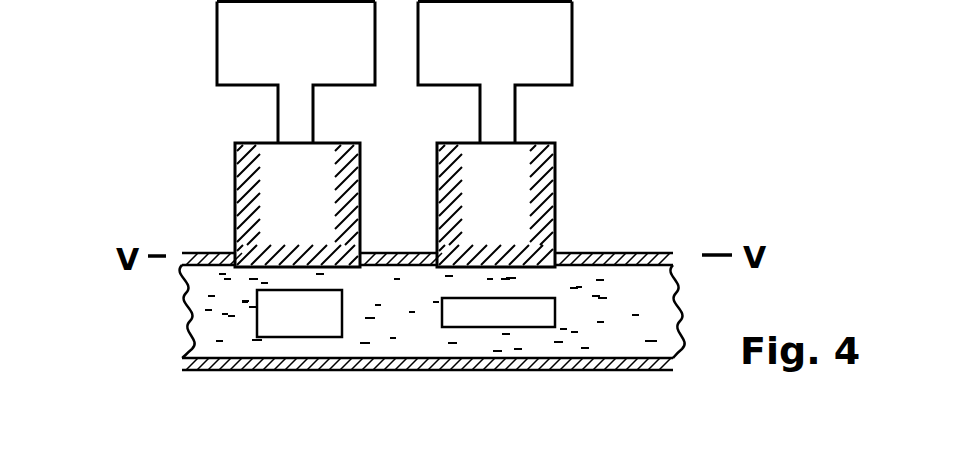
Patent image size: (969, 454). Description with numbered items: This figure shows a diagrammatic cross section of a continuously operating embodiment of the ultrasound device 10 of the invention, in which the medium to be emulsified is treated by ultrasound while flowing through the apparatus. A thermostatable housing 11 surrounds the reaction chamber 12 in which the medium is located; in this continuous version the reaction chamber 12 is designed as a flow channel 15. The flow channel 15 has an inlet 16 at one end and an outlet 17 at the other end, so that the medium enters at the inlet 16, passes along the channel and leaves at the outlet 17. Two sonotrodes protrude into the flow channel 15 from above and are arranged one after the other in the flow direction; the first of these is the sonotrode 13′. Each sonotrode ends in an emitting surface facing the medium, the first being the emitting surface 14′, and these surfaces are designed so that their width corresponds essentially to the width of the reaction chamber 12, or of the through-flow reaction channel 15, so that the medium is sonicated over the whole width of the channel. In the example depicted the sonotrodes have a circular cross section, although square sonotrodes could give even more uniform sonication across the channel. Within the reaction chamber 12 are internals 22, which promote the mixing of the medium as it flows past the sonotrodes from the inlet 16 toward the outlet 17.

The ultrasound device 10 is at (706, 64).
The thermostatable housing 11 is at (302, 366).
The reaction chamber 12 is at (273, 345).
The sonotrode 13′ is at (255, 220).
The emitting surface 14′ is at (297, 267).
The flow channel 15 is at (611, 326).
The inlet 16 is at (203, 317).
The outlet 17 is at (639, 293).
The internals 22 is at (490, 318).